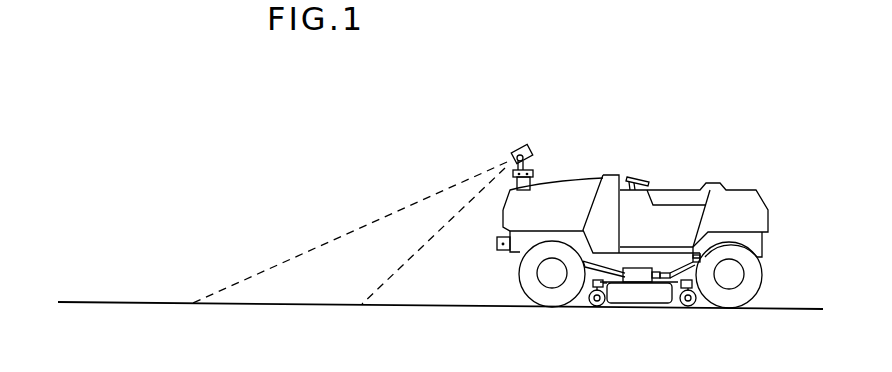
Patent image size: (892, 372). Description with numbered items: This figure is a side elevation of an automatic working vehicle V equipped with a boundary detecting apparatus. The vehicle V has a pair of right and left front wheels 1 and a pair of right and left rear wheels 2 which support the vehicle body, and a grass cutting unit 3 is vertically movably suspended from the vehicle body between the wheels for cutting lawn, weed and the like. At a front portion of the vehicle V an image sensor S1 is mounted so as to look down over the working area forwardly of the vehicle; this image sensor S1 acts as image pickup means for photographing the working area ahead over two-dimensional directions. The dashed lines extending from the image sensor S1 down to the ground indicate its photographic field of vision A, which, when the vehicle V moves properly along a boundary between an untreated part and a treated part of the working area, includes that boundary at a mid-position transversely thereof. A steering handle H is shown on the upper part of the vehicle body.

The front wheels 1 is at (521, 280).
The rear wheels 2 is at (728, 300).
The grass cutting unit 3 is at (637, 300).
The image sensor S1 is at (519, 146).
The working vehicle V is at (588, 174).
The steering handle H is at (652, 177).
The field of vision A is at (365, 236).